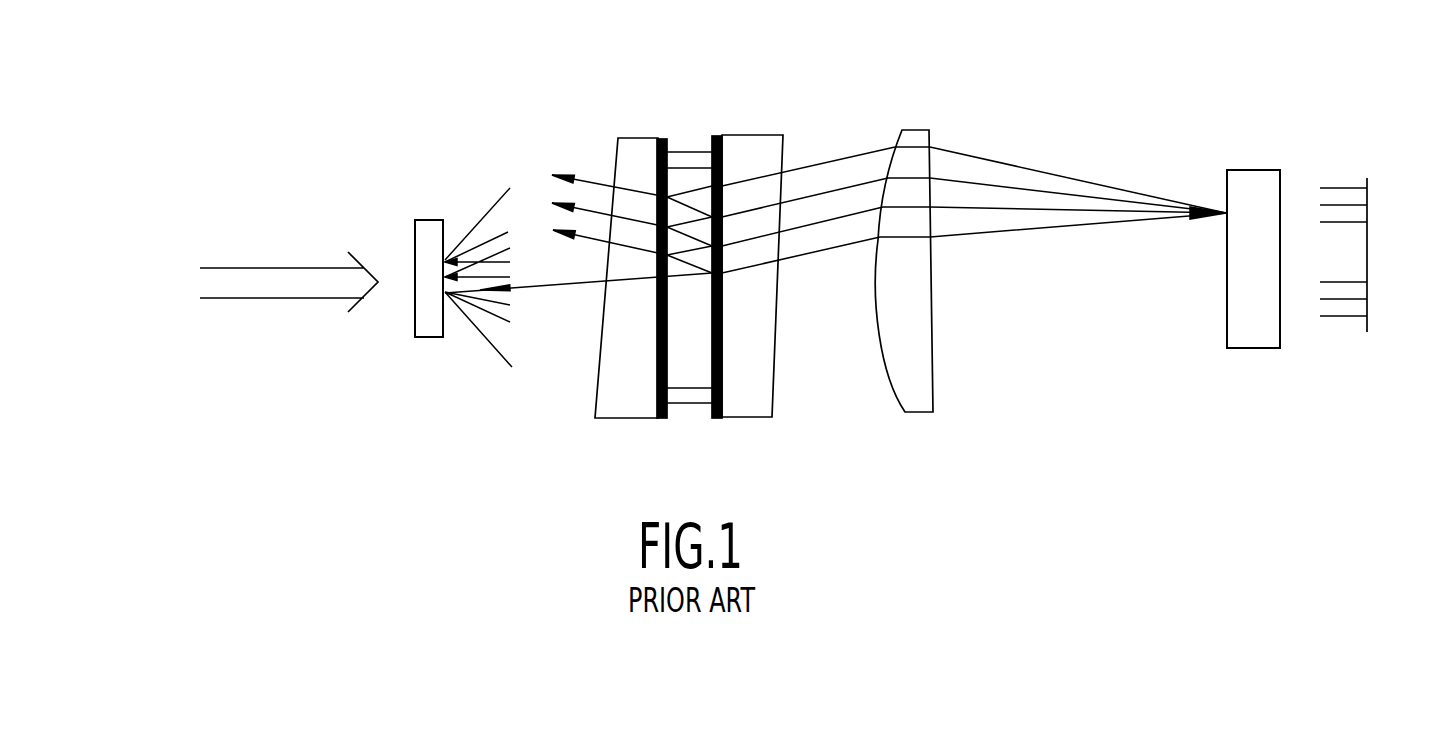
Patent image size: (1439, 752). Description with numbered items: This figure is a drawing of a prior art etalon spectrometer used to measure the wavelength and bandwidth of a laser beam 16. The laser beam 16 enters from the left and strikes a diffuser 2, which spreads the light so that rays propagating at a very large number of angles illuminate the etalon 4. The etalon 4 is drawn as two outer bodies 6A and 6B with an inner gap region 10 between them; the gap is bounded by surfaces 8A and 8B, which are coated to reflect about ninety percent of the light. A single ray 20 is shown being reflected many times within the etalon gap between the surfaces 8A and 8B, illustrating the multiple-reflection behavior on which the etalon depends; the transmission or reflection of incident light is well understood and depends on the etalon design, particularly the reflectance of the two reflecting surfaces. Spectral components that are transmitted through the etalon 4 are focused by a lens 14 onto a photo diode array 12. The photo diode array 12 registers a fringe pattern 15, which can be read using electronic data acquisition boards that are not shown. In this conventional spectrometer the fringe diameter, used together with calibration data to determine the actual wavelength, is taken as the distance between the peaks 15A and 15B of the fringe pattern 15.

The diffuser 2 is at (433, 220).
The etalon 4 is at (698, 249).
The first prism 6A is at (642, 138).
The second prism 6B is at (762, 135).
The reflecting surface 8A is at (662, 420).
The reflecting surface 8B is at (718, 420).
The gap / etalon cavity 10 is at (690, 152).
The photo diode array 12 is at (1248, 170).
The lens 14 is at (922, 120).
The fringe pattern 15 is at (1363, 225).
The peak 15A is at (1342, 317).
The peak 15B is at (1340, 188).
The laser beam 16 is at (245, 255).
The single ray 20 is at (547, 295).